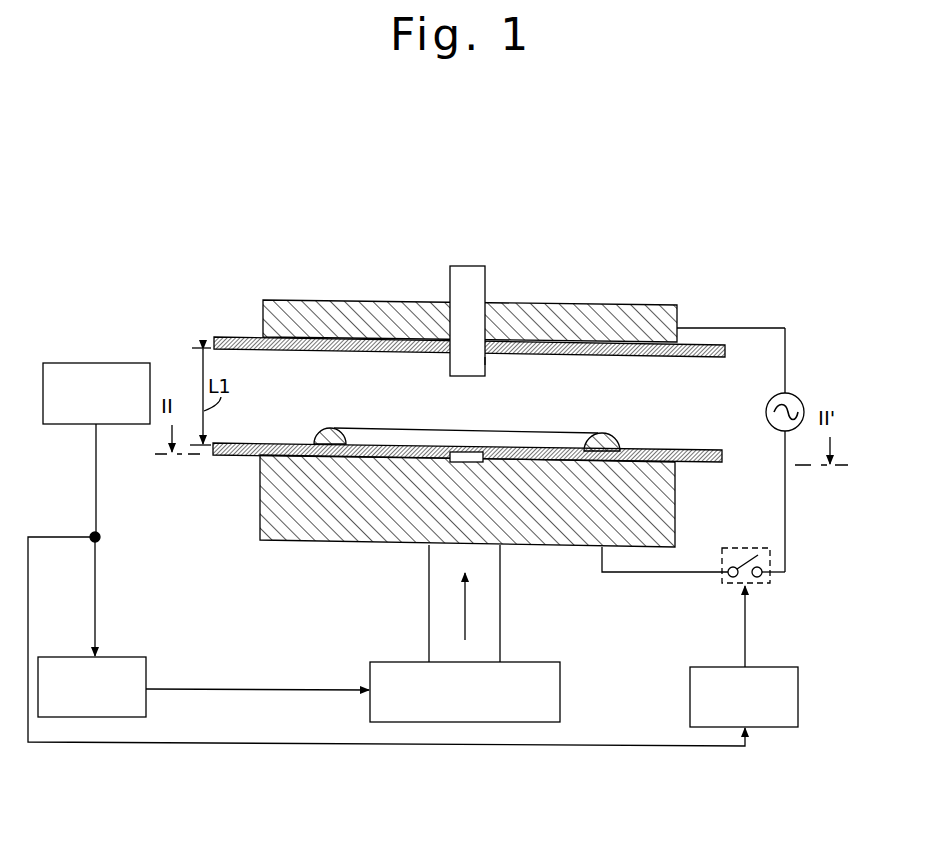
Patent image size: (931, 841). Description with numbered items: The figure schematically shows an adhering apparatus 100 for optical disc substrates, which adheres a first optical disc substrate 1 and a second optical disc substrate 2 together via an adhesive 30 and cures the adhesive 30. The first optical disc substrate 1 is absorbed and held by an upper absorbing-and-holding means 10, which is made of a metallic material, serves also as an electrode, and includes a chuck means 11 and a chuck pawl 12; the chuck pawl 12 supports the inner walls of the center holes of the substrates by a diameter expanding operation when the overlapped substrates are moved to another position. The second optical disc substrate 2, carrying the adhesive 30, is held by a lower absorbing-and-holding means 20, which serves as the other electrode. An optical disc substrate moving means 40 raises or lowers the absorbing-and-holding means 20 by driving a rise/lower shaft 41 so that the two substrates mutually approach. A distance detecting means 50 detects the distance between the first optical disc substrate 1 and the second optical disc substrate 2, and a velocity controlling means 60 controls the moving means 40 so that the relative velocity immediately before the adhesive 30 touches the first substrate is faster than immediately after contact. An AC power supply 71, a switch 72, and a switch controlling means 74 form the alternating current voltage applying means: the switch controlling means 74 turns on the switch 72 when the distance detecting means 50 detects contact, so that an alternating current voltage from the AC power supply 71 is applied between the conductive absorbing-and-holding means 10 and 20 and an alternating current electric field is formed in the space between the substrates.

The adhering apparatus 100 is at (134, 139).
The first optical disc substrate 1 is at (229, 336).
The second optical disc substrate 2 is at (233, 460).
The absorbing-and-holding means 10 is at (638, 305).
The chuck means 11 is at (458, 267).
The chuck pawl 12 is at (486, 363).
The absorbing-and-holding means 20 is at (343, 545).
The adhesive 30 is at (324, 431).
The optical disc substrate moving means 40 is at (465, 679).
The rise/lower shaft 41 is at (502, 600).
The distance detecting means 50 is at (96, 436).
The velocity controlling means 60 is at (386, 639).
The AC power supply 71 is at (766, 410).
The switch 72 is at (753, 552).
The switch controlling means 74 is at (745, 656).